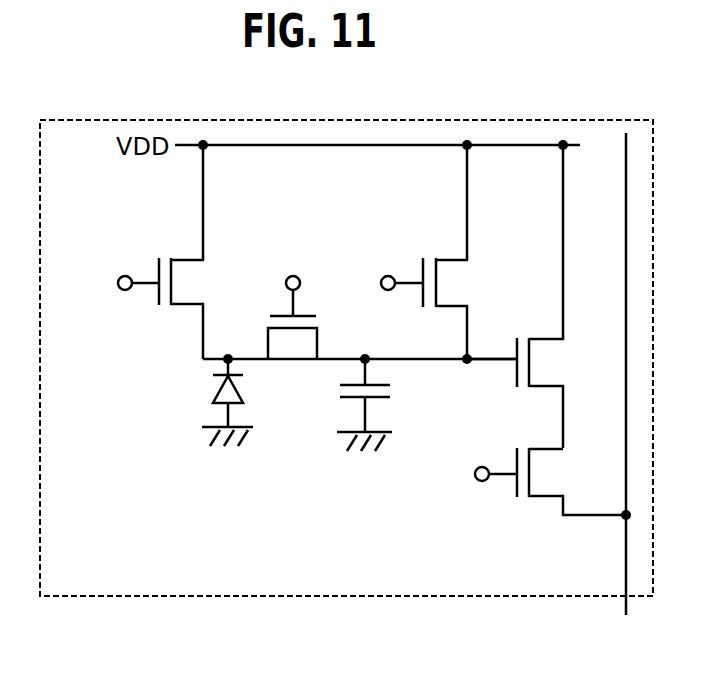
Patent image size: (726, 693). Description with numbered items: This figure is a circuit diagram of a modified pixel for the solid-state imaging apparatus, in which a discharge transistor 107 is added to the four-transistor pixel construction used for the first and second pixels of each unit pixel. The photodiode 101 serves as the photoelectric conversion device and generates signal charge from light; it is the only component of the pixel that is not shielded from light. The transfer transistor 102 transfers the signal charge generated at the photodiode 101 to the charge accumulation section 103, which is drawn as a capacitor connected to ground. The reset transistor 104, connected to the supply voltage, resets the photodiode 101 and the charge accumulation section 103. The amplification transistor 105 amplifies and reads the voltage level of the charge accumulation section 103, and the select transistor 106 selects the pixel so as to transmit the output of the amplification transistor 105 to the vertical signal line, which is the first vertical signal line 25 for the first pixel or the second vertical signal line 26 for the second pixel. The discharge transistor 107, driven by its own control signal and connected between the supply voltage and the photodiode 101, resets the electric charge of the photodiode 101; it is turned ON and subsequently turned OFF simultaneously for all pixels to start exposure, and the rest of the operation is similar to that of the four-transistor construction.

The photodiode 101 is at (212, 392).
The transfer transistor 102 is at (293, 352).
The charge accumulation section 103 is at (390, 392).
The reset transistor 104 is at (417, 267).
The amplification transistor 105 is at (548, 361).
The select transistor 106 is at (512, 487).
The discharge transistor 107 is at (162, 308).
The first vertical signal line 25 is at (626, 565).
The second vertical signal line 26 is at (573, 374).